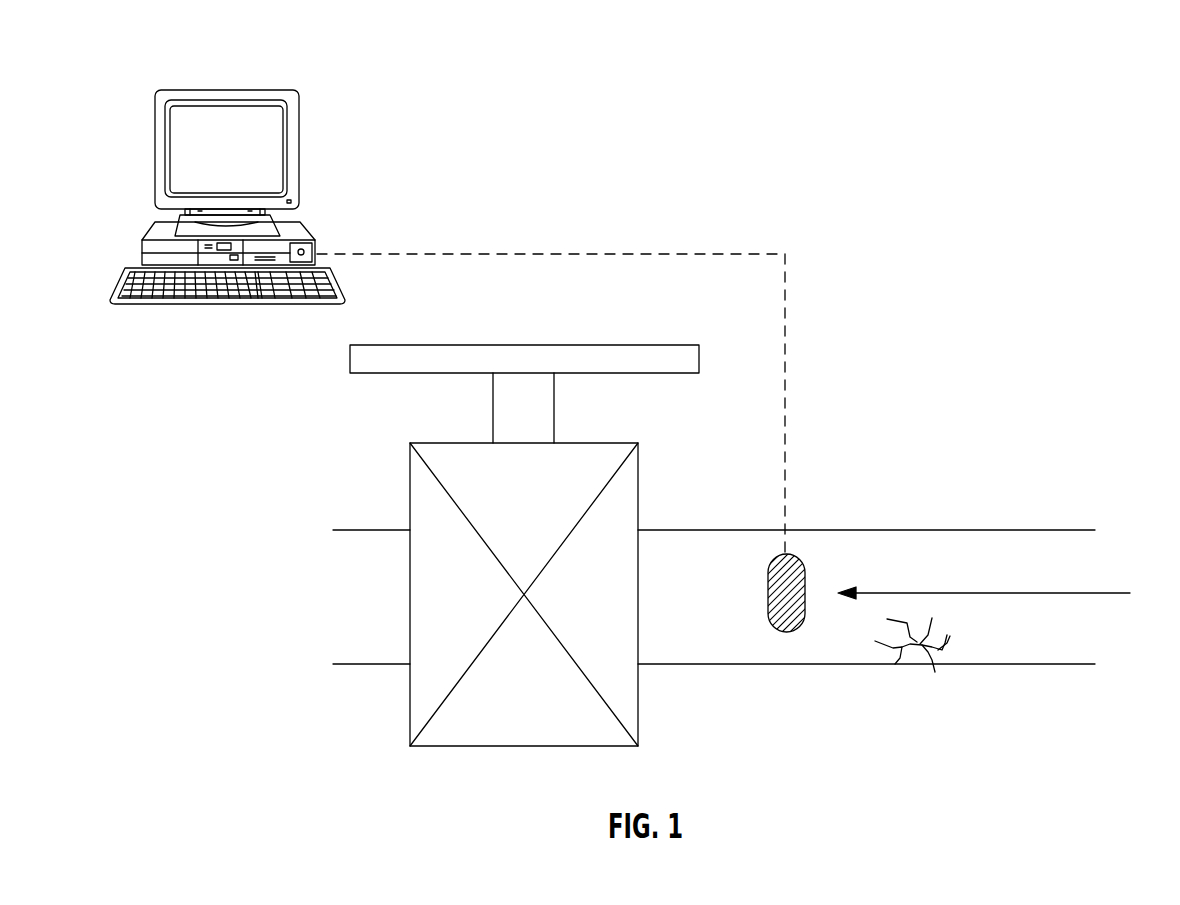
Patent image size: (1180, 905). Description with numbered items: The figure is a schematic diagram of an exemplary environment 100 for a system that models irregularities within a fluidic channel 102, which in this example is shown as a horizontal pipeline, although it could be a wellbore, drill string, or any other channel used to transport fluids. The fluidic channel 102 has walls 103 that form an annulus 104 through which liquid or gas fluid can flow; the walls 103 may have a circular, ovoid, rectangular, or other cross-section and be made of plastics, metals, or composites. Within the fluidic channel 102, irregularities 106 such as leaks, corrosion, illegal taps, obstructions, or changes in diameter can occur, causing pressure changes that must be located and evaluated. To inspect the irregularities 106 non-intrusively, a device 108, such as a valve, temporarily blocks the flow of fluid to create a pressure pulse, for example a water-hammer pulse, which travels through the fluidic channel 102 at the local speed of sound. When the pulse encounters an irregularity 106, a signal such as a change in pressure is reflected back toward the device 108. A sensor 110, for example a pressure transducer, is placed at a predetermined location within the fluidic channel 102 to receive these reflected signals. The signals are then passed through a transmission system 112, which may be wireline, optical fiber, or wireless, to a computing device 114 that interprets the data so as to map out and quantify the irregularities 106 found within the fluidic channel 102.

The exemplary environment 100 is at (951, 195).
The fluidic channel 102 is at (962, 474).
The walls 103 is at (1018, 530).
The annulus 104 is at (1053, 592).
The irregularities 106 is at (930, 668).
The device 108 is at (592, 442).
The sensor 110 is at (805, 562).
The transmission system 112 is at (703, 253).
The computing device 114 is at (198, 88).